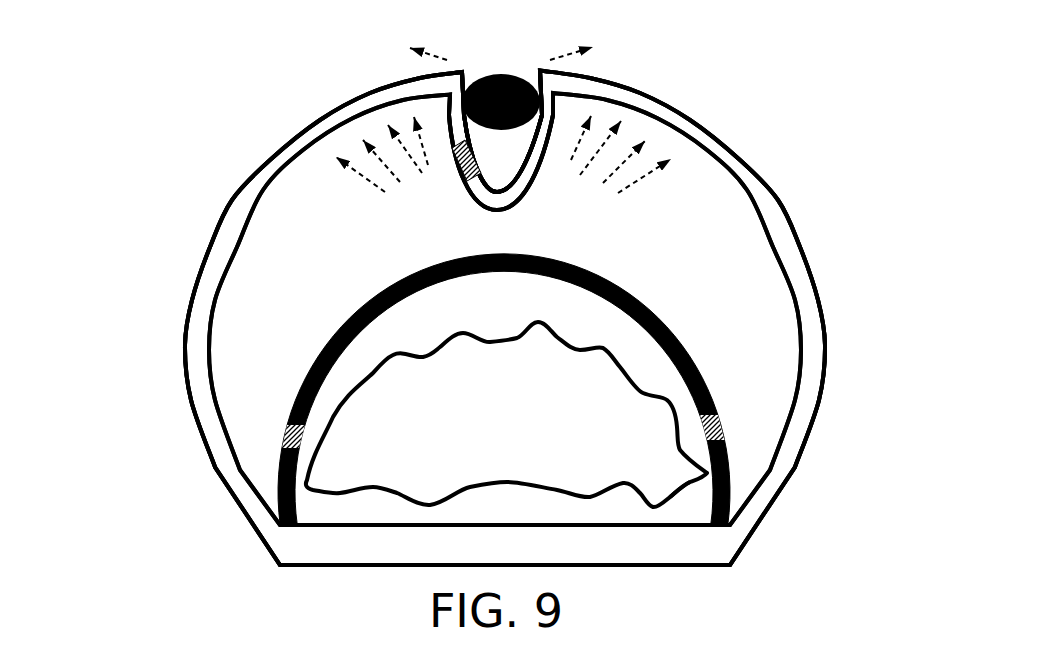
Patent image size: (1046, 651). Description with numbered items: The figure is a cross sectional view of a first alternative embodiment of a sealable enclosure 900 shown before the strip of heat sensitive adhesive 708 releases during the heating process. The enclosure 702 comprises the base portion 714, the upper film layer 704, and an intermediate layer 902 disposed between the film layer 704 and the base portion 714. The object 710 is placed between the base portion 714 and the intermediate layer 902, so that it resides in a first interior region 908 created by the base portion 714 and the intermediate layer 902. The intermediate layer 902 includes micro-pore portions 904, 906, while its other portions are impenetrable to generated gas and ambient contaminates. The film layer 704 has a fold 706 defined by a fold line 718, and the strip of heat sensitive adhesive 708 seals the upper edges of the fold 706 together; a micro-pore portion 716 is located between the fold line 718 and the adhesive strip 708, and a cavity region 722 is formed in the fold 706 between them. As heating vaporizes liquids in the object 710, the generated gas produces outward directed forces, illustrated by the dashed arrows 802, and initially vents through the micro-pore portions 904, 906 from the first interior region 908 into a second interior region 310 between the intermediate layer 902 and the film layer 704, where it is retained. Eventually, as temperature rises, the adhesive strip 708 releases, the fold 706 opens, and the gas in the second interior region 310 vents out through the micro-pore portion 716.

The sealable enclosure 900 is at (158, 550).
The enclosure 702 is at (670, 63).
The film layer 704 is at (241, 193).
The second interior region 310 is at (743, 277).
The base portion 714 is at (310, 565).
The fold 706 is at (545, 197).
The fold line 718 is at (506, 214).
The cavity region 722 is at (505, 170).
The strip of heat sensitive adhesive 708 is at (505, 72).
The micro-pore portion 716 is at (455, 168).
The dashed arrows 802 is at (347, 187).
The intermediate layer 902 is at (337, 342).
The micro-pore portion 904 is at (297, 432).
The micro-pore portion 906 is at (706, 428).
The object 710 is at (490, 419).
The first interior region 908 is at (692, 500).